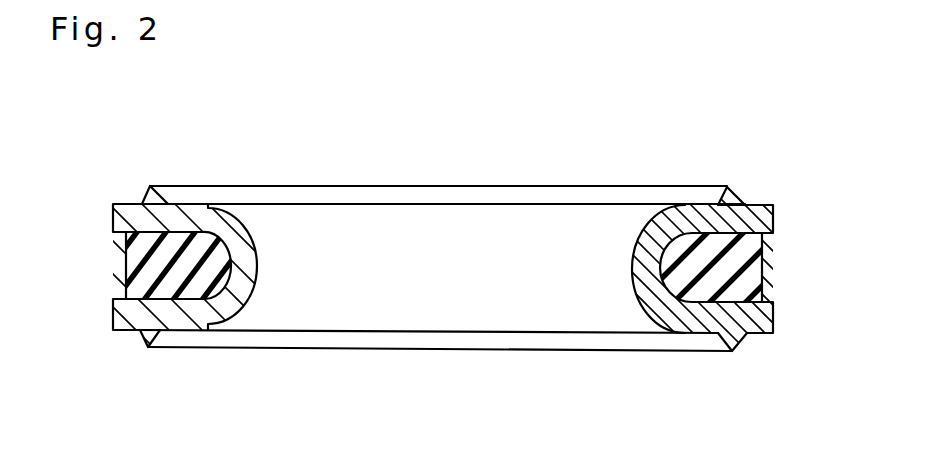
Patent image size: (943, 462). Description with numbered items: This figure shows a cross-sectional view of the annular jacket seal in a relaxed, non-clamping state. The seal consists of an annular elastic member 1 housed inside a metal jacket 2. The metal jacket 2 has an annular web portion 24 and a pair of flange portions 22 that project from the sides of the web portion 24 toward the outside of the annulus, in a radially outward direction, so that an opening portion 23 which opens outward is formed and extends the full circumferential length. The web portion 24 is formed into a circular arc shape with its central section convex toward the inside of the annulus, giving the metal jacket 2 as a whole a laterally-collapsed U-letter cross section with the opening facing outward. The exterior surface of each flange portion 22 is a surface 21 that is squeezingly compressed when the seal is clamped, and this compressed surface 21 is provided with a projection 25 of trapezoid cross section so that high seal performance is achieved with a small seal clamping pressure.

The annular elastic member 1 is at (126, 267).
The metal jacket 2 is at (445, 348).
The surface being squeezingly compressed 21 is at (193, 204).
The flange portion 22 is at (123, 217).
The opening portion 23 is at (118, 250).
The annular web portion 24 is at (260, 262).
The projection 25 is at (159, 192).